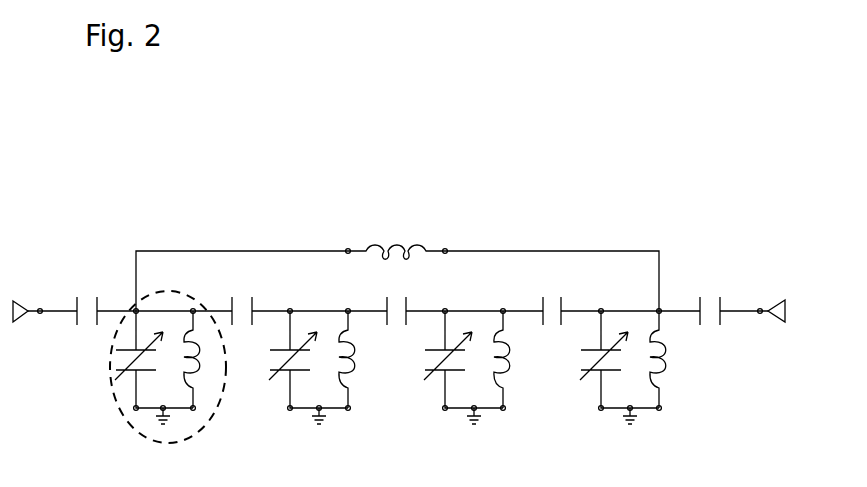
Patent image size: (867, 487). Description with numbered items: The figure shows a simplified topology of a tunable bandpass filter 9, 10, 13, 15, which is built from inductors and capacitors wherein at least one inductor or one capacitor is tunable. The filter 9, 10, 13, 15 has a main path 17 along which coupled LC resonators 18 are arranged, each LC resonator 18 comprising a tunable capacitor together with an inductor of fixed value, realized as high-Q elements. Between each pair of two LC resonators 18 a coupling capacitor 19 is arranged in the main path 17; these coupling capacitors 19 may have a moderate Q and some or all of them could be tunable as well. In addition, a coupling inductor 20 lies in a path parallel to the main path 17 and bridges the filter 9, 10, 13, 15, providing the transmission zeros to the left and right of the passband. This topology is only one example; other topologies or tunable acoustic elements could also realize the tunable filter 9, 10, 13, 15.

The tunable bandpass filter 9 is at (399, 287).
The tunable bandpass filter 10 is at (399, 287).
The tunable bandpass filter 13 is at (399, 287).
The tunable bandpass filter 15 is at (130, 180).
The main path 17 is at (378, 313).
The LC resonator 18 is at (122, 414).
The coupling capacitor 19 is at (252, 323).
The coupling inductor 20 is at (405, 243).